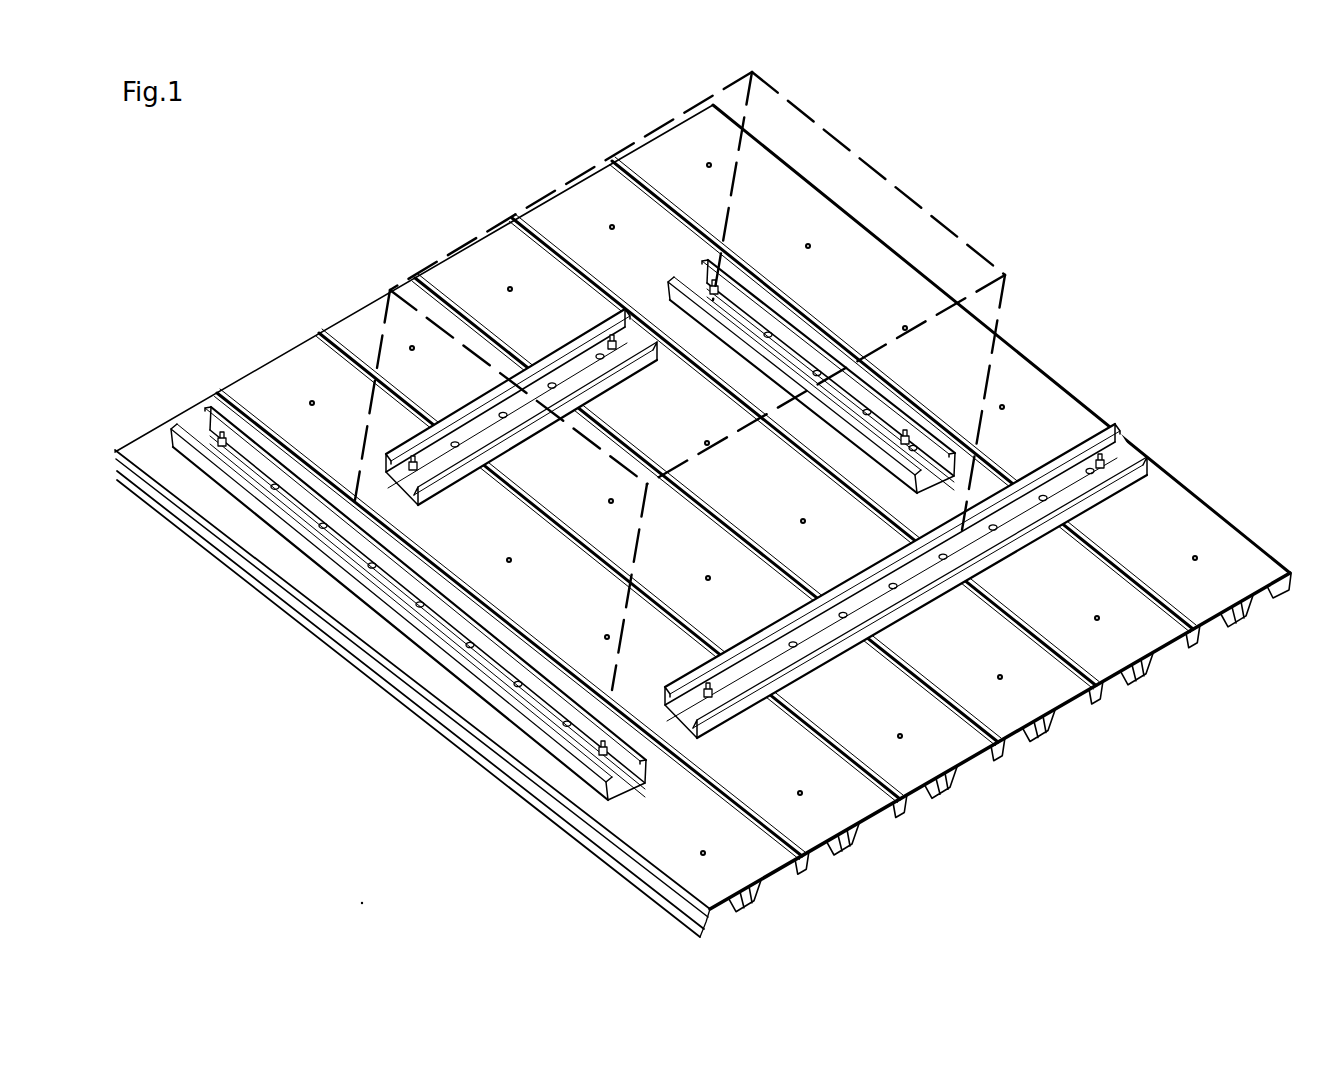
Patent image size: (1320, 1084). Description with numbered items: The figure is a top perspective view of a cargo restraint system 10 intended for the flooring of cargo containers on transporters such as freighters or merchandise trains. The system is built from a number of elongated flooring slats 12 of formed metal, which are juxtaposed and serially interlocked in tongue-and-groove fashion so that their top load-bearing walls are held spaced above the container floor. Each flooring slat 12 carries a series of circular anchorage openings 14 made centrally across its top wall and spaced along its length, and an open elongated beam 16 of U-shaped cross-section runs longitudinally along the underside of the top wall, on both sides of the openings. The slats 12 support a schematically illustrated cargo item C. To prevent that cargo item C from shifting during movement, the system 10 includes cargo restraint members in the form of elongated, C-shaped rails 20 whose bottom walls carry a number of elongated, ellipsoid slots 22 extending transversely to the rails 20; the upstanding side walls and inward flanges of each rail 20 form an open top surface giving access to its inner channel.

The cargo restraint system 10 is at (1072, 255).
The flooring slat 12 is at (1233, 582).
The anchorage opening 14 is at (999, 680).
The open elongated beam 16 is at (942, 792).
The rail 20 is at (400, 421).
The slot 22 is at (1015, 525).
The cargo item C is at (872, 155).